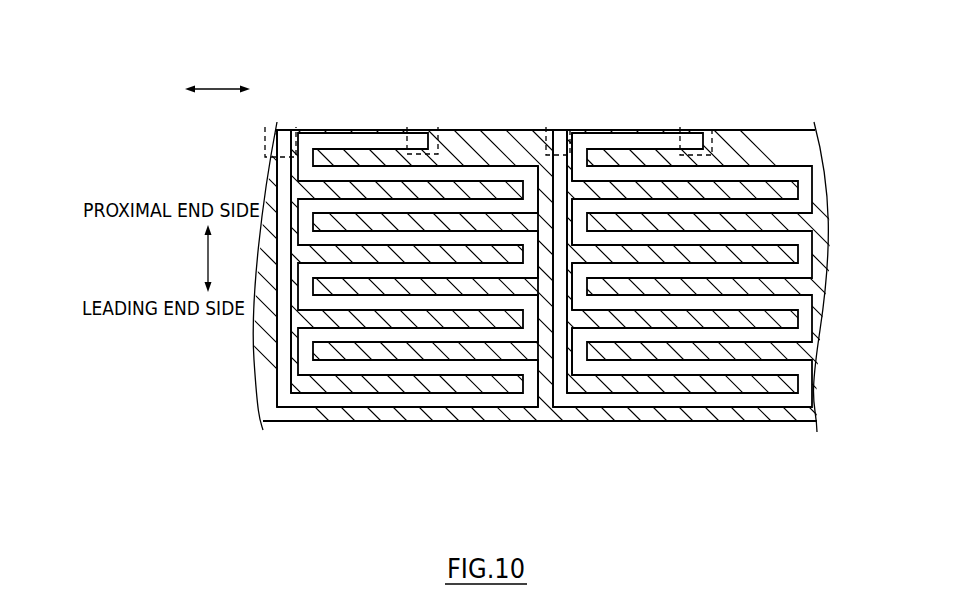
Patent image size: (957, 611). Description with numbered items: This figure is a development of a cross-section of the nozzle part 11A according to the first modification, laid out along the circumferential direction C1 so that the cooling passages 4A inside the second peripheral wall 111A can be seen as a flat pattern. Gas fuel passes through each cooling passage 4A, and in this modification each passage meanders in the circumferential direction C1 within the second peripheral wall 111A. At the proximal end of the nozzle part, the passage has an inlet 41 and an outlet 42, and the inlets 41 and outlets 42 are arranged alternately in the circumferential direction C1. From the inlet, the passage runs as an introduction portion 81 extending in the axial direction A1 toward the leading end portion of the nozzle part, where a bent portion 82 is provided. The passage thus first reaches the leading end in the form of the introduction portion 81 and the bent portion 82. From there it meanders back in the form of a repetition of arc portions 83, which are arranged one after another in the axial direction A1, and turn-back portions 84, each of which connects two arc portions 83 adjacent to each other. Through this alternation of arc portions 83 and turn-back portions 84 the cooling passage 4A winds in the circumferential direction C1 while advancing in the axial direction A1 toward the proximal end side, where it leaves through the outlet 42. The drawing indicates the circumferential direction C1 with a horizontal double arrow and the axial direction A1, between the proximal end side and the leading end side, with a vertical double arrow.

The cooling passage 4A is at (478, 172).
The nozzle part 11A is at (452, 425).
The second peripheral wall 111A is at (392, 422).
The introduction portion 81 is at (287, 348).
The bent portion 82 is at (285, 400).
The arc portion 83 is at (697, 377).
The turn-back portion 84 is at (533, 393).
The inlet 41 is at (317, 124).
The outlet 42 is at (462, 130).
The circumferential direction C1 is at (223, 87).
The axial direction A1 is at (207, 268).